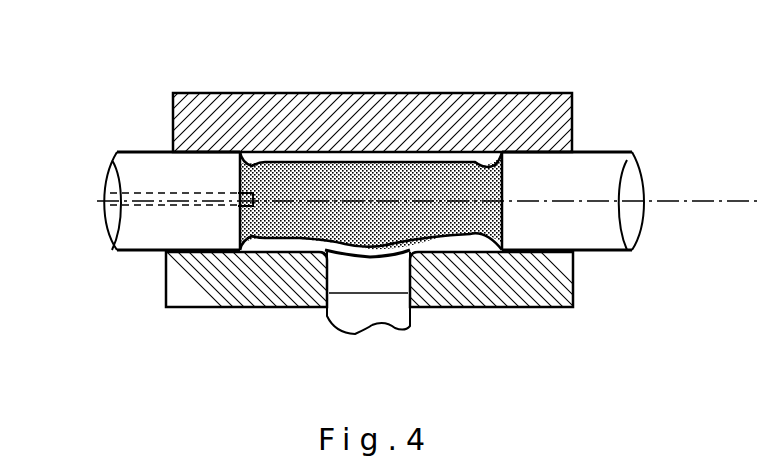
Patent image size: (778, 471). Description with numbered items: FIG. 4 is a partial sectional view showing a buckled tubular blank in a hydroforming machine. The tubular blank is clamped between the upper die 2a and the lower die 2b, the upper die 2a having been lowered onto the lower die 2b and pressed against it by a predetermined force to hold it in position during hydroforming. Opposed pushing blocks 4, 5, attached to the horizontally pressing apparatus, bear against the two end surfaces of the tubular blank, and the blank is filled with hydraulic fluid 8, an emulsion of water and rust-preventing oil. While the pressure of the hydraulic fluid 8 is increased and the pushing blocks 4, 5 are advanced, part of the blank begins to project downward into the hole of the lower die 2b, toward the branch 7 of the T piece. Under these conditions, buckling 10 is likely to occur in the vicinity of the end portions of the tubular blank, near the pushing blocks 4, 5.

The upper die 2a is at (551, 121).
The lower die 2b is at (560, 287).
The pushing block 4 is at (135, 172).
The pushing block 5 is at (607, 185).
The branch pipe / bore 7 is at (397, 321).
The hydraulic fluid 8 is at (368, 198).
The buckling 10 is at (490, 162).